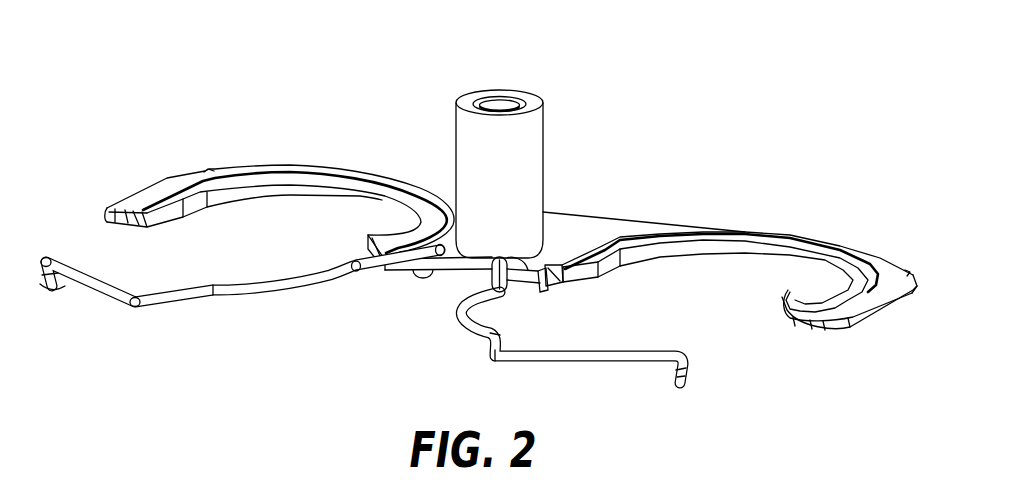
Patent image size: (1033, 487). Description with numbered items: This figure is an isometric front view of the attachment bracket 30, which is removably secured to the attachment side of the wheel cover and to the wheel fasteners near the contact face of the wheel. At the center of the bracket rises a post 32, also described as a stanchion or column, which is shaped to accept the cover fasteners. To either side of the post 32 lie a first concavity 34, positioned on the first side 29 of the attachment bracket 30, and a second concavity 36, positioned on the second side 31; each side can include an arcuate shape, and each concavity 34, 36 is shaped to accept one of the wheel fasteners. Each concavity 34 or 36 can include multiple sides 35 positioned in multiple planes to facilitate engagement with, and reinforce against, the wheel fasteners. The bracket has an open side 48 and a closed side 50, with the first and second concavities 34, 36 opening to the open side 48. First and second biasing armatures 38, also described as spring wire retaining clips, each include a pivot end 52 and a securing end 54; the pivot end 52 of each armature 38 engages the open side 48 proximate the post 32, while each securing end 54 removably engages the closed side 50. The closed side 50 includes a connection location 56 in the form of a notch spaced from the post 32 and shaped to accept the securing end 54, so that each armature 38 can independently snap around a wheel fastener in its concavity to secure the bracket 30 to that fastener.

The first side 29 is at (340, 134).
The attachment bracket 30 is at (688, 79).
The second side 31 is at (815, 204).
The post 32 is at (525, 158).
The first concavity 34 is at (282, 224).
The multiple sides 35 is at (355, 171).
The second concavity 36 is at (729, 284).
The biasing armature 38 is at (176, 323).
The open side 48 is at (784, 374).
The closed side 50 is at (637, 197).
The pivot end 52 is at (466, 289).
The securing end 54 is at (54, 300).
The connection location 56 is at (214, 162).